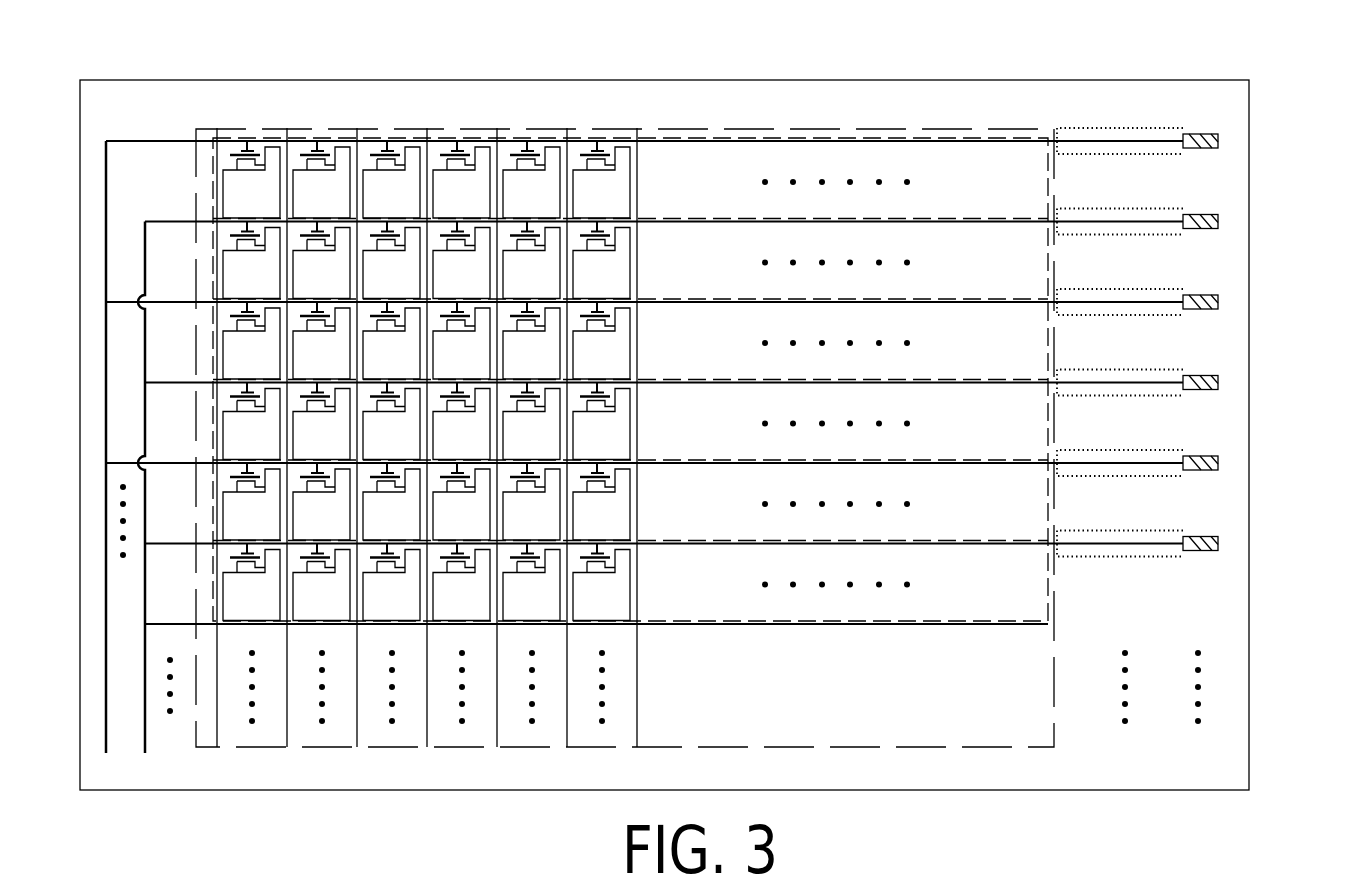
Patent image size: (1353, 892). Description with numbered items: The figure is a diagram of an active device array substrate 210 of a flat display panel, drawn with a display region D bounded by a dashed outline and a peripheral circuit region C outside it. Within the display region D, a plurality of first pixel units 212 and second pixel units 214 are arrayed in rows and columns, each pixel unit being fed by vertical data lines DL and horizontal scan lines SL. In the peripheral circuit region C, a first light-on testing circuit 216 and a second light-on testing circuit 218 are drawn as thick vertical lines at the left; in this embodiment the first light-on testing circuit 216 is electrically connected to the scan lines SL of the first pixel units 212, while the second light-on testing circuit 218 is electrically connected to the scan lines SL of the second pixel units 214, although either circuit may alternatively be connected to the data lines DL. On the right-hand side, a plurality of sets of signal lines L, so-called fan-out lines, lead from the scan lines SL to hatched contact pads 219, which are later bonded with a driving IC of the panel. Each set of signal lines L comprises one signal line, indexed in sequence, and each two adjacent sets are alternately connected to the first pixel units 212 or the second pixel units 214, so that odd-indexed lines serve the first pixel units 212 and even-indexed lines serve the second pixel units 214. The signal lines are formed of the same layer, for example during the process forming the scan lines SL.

The active device array substrate 210 is at (1350, 761).
The first pixel units 212 is at (1050, 186).
The second pixel units 214 is at (1050, 266).
The first light-on testing circuit 216 is at (131, 141).
The second light-on testing circuit 218 is at (173, 221).
The contact pads 219 is at (1218, 137).
The display region D is at (690, 126).
The data lines DL is at (289, 148).
The scan lines SL is at (838, 220).
The sets of signal lines L is at (1150, 127).
The peripheral circuit region C is at (1210, 692).